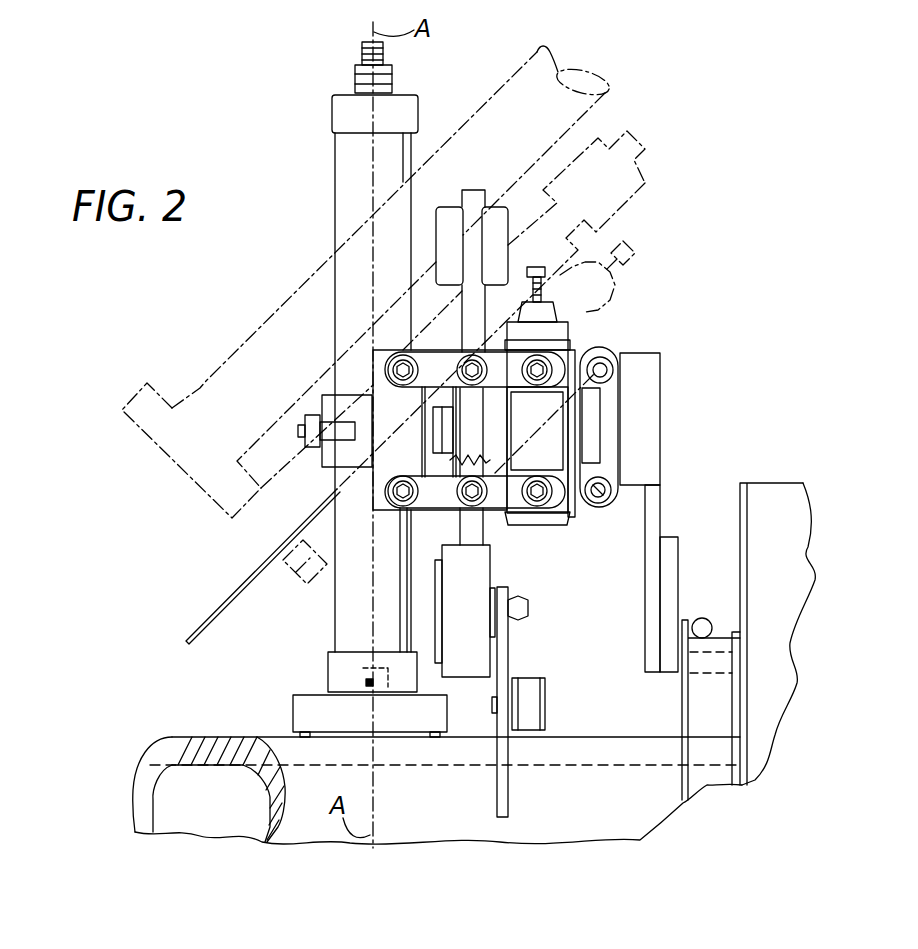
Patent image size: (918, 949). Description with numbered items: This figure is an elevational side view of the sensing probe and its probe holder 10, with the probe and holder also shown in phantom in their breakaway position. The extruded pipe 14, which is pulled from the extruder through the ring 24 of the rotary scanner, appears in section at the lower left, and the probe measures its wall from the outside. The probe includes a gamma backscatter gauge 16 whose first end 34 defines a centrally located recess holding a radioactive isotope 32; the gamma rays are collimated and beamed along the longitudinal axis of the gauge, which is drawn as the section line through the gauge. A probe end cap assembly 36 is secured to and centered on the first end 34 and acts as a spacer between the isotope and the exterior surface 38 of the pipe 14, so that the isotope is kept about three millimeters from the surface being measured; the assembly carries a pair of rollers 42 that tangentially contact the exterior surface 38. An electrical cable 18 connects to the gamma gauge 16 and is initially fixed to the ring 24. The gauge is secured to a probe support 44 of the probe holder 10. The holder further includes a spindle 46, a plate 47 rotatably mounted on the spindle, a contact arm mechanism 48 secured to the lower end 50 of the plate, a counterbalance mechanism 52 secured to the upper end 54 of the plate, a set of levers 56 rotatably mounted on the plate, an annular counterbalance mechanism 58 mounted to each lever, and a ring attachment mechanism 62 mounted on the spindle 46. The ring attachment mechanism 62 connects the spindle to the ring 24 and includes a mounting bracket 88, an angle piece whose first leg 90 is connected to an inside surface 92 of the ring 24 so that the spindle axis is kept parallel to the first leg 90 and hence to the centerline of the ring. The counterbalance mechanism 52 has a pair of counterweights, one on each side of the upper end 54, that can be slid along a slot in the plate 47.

The probe holder 10 is at (628, 287).
The extruded pipe 14 is at (160, 802).
The gamma backscatter gauge 16 is at (337, 165).
The electrical cable 18 is at (702, 618).
The ring 24 is at (727, 632).
The radioactive isotope 32 is at (368, 683).
The first end 34 is at (330, 668).
The probe end cap assembly 36 is at (302, 715).
The exterior surface 38 is at (197, 737).
The rollers 42 is at (432, 738).
The probe support 44 is at (357, 374).
The spindle 46 is at (500, 433).
The plate 47 is at (470, 320).
The contact arm mechanism 48 is at (533, 668).
The lower end 50 is at (473, 588).
The counterbalance mechanism 52 is at (437, 250).
The upper end 54 is at (462, 222).
The levers 56 is at (526, 502).
The annular counterbalance mechanism 58 is at (563, 357).
The ring attachment mechanism 62 is at (672, 440).
The mounting bracket 88 is at (672, 537).
The first leg 90 is at (722, 662).
The inside surface 92 is at (722, 645).